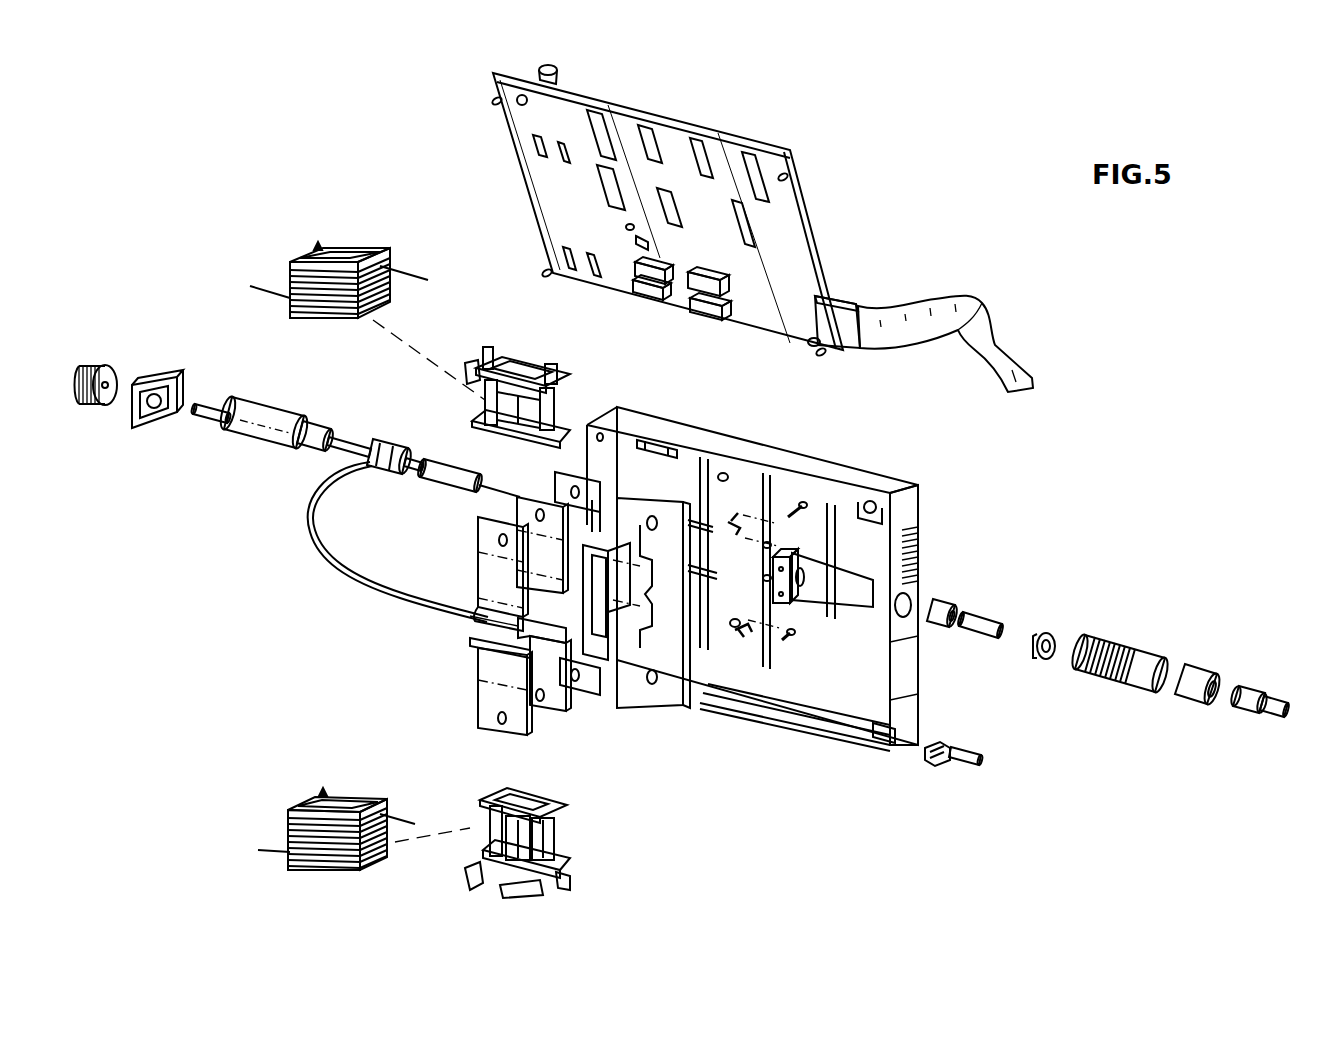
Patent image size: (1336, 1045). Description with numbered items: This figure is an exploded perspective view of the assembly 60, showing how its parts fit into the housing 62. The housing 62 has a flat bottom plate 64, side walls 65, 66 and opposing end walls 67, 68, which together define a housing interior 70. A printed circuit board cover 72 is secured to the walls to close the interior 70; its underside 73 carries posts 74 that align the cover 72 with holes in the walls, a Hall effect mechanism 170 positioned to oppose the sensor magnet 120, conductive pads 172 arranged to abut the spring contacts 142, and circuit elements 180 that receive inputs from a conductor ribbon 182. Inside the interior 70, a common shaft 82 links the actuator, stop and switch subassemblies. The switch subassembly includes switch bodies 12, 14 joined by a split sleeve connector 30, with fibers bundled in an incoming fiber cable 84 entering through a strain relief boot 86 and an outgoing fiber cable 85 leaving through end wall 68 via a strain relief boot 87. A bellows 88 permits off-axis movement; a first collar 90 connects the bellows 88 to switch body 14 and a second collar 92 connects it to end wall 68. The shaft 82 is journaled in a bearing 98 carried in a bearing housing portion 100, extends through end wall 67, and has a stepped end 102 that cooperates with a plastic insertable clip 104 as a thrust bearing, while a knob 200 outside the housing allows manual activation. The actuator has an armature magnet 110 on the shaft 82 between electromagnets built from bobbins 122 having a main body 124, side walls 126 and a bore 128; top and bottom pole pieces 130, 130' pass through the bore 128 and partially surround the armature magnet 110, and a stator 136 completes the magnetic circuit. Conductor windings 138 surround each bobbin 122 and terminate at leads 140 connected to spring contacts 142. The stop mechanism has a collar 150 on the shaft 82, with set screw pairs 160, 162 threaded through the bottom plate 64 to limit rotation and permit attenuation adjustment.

The printed circuit board cover 72 is at (668, 114).
The posts 74 is at (492, 103).
The conductive pads 172 is at (535, 145).
The Hall effect mechanism 170 is at (624, 229).
The circuit elements 180 is at (745, 230).
The underside of the cover 73 is at (795, 220).
The conductor ribbon 182 is at (959, 300).
The conductor windings 138 is at (318, 243).
The leads 140 is at (252, 285).
The spring contacts 142 is at (481, 366).
The side walls 126 is at (498, 358).
The bore 128 is at (550, 370).
The bobbins 122 is at (556, 393).
The main body 124 is at (556, 843).
The knob 200 is at (92, 362).
The plastic insertable clip 104 is at (160, 377).
The stepped end 102 is at (218, 423).
The armature magnet 110 is at (262, 418).
The sensor magnet 120 is at (310, 452).
The common shaft 82 is at (355, 446).
The collar 150 is at (385, 450).
The switch body 12 is at (426, 467).
The split sleeve connector 30 is at (444, 493).
The incoming fiber cable 84 is at (343, 582).
The top pole piece 130 is at (475, 626).
The bottom pole piece 130' is at (516, 622).
The stator 136 is at (667, 715).
The outgoing fiber cable 85 is at (504, 492).
The end wall 67 is at (600, 452).
The side wall 66 is at (740, 437).
The front set screw pair 160 is at (800, 508).
The back set screw pair 162 is at (735, 519).
The bearing housing portion 100 is at (806, 578).
The housing interior 70 is at (840, 695).
The end wall 68 is at (912, 690).
The flat bottom plate 64 is at (728, 690).
The side wall 65 is at (792, 715).
The housing 62 is at (856, 765).
The bearing 98 is at (945, 603).
The switch body 14 is at (980, 626).
The first collar 90 is at (1047, 633).
The bellows 88 is at (1128, 652).
The second collar 92 is at (1198, 673).
The strain relief boot 87 is at (1272, 697).
The strain relief boot 86 is at (955, 766).
The assembly 60 is at (290, 685).